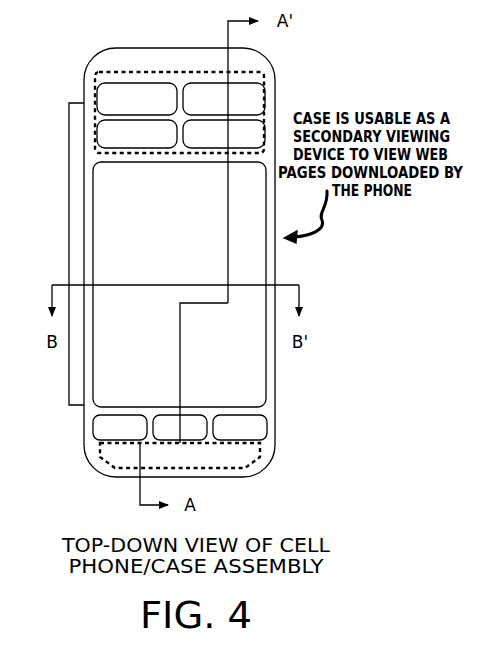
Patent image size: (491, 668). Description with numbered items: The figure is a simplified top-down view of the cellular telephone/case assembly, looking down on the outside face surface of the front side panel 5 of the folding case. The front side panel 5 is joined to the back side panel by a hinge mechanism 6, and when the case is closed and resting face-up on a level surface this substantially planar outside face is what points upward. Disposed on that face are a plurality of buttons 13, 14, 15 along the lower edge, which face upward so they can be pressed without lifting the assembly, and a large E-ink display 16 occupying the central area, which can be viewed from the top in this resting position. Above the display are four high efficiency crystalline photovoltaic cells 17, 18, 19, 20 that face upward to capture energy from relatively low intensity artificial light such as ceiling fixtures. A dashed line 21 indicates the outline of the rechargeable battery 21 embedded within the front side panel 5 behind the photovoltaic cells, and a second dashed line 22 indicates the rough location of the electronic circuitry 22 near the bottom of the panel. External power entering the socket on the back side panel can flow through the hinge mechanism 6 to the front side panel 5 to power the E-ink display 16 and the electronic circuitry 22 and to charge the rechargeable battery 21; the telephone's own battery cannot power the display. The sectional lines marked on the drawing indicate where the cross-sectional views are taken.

The front side panel 5 is at (276, 375).
The hinge mechanism 6 is at (69, 385).
The button 13 is at (111, 437).
The button 14 is at (159, 437).
The button 15 is at (231, 437).
The E-ink display 16 is at (163, 249).
The photovoltaic cell 17 is at (127, 108).
The photovoltaic cell 18 is at (214, 108).
The photovoltaic cell 19 is at (127, 143).
The photovoltaic cell 20 is at (214, 143).
The rechargeable battery 21 is at (130, 72).
The electronic circuitry 22 is at (260, 452).